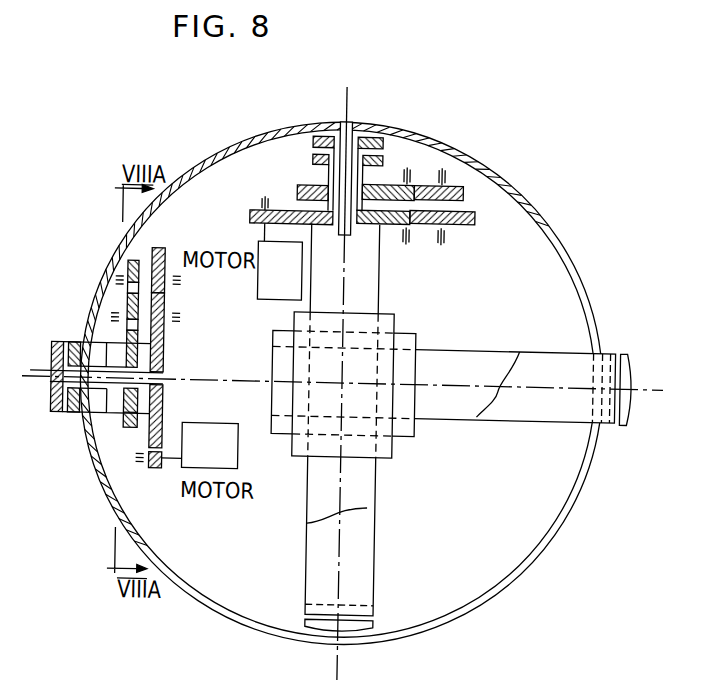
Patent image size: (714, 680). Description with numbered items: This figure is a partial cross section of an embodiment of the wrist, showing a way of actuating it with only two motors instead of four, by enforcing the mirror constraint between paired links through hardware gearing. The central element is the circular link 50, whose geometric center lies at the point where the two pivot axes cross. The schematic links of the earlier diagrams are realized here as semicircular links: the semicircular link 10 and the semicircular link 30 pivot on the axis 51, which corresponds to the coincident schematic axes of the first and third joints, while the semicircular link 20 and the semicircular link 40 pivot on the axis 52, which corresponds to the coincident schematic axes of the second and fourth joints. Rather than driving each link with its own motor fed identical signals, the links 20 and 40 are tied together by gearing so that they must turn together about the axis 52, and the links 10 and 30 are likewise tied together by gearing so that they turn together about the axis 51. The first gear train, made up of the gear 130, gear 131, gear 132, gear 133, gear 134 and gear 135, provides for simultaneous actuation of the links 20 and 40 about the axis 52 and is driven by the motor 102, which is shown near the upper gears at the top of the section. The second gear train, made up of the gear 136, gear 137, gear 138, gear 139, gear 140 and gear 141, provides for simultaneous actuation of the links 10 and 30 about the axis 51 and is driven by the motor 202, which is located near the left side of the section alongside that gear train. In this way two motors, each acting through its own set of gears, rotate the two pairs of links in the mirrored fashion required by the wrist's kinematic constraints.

The semicircular link 10 is at (54, 348).
The semicircular link 20 is at (368, 141).
The semicircular link 30 is at (76, 418).
The semicircular link 40 is at (309, 156).
The circular link 50 is at (556, 232).
The axis 51 is at (464, 384).
The axis 52 is at (341, 478).
The motor 102 is at (279, 270).
The gear 130 is at (250, 219).
The gear 131 is at (367, 224).
The gear 132 is at (451, 228).
The gear 133 is at (449, 190).
The gear 134 is at (409, 185).
The gear 135 is at (309, 189).
The gear 136 is at (152, 475).
The gear 137 is at (158, 361).
The gear 138 is at (160, 299).
The gear 139 is at (125, 278).
The gear 140 is at (127, 312).
The gear 141 is at (121, 422).
The motor 202 is at (209, 445).